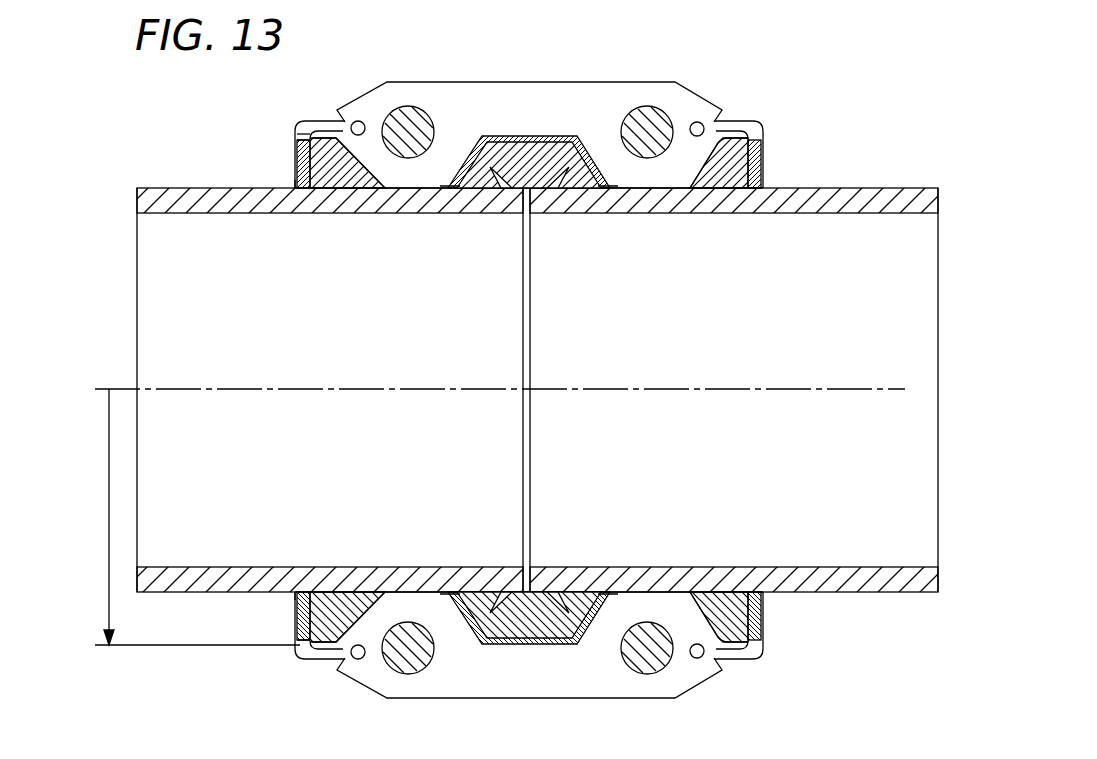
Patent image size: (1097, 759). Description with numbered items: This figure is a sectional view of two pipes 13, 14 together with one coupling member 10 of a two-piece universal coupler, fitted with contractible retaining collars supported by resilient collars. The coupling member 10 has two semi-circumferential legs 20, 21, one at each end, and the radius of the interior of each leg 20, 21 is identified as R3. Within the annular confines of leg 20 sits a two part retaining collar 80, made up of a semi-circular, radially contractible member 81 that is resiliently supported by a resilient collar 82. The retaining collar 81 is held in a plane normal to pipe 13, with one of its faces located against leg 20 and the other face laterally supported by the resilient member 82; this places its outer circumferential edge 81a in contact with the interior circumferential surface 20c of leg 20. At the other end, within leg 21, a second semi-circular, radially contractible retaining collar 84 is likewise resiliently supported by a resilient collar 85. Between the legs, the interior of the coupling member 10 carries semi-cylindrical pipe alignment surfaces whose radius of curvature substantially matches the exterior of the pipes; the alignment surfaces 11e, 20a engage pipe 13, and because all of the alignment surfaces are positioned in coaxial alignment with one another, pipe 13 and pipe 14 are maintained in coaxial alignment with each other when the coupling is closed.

The coupling member 10 is at (632, 76).
The pipe 13 is at (157, 188).
The pipe 14 is at (940, 205).
The semi-circumferential leg 20 is at (315, 120).
The semi-circumferential leg 21 is at (742, 120).
The second circular pipe alignment surface 20a is at (300, 189).
The interior circumferential surface 20c is at (333, 646).
The two part retaining collar 80 is at (306, 132).
The radially contractible member 81 is at (302, 170).
The outer circumferential edge 81a is at (298, 134).
The resilient collar 82 is at (333, 140).
The second retaining collar 84 is at (746, 152).
The resilient collar 85 is at (752, 172).
The first circular pipe alignment surface 11e is at (410, 190).
The radius of the interior of the legs R3 is at (197, 517).